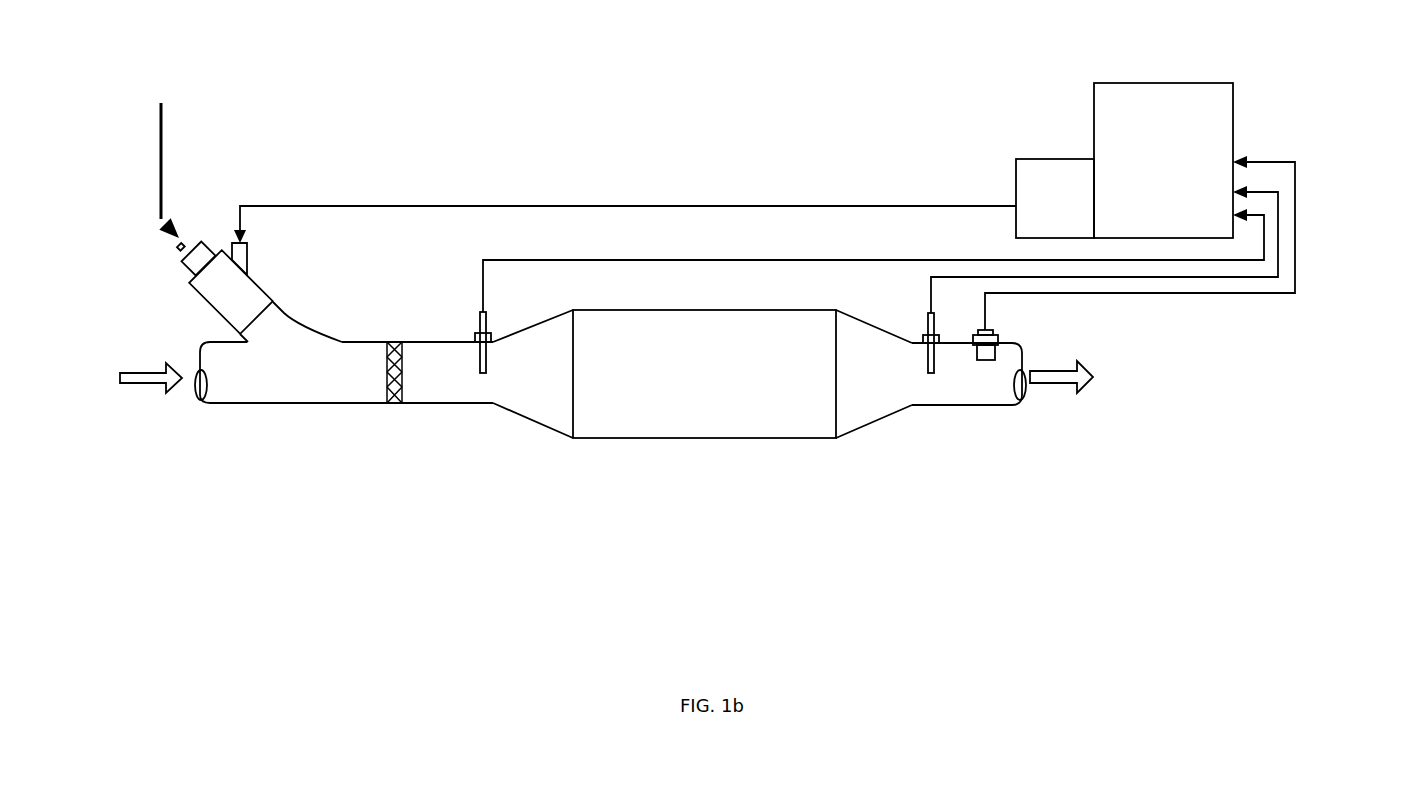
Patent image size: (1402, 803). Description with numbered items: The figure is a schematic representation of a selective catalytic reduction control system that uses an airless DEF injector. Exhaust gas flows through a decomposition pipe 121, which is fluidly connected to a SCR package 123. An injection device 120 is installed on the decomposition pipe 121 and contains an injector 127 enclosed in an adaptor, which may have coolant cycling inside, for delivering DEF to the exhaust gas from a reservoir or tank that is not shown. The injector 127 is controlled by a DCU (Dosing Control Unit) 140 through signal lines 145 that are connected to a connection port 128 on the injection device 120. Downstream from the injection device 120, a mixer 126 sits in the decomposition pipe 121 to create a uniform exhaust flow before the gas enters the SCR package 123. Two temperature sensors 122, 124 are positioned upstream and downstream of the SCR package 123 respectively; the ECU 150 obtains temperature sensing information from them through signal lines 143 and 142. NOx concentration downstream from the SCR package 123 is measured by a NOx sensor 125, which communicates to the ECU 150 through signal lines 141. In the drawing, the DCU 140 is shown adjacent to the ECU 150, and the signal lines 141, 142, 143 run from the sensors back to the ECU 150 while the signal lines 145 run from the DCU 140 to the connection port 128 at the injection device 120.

The injection device 120 is at (264, 288).
The decomposition pipe 121 is at (253, 405).
The temperature sensor 122 is at (476, 333).
The SCR package 123 is at (699, 310).
The temperature sensor 124 is at (927, 314).
The NOx sensor 125 is at (997, 332).
The mixer 126 is at (402, 398).
The injector 127 is at (183, 252).
The connection port 128 is at (248, 262).
The DCU (Dosing Control Unit) 140 is at (1036, 248).
The signal lines 141 is at (1296, 165).
The signal lines 142 is at (1296, 220).
The signal lines 143 is at (1280, 258).
The signal lines 145 is at (699, 207).
The ECU 150 is at (1176, 72).